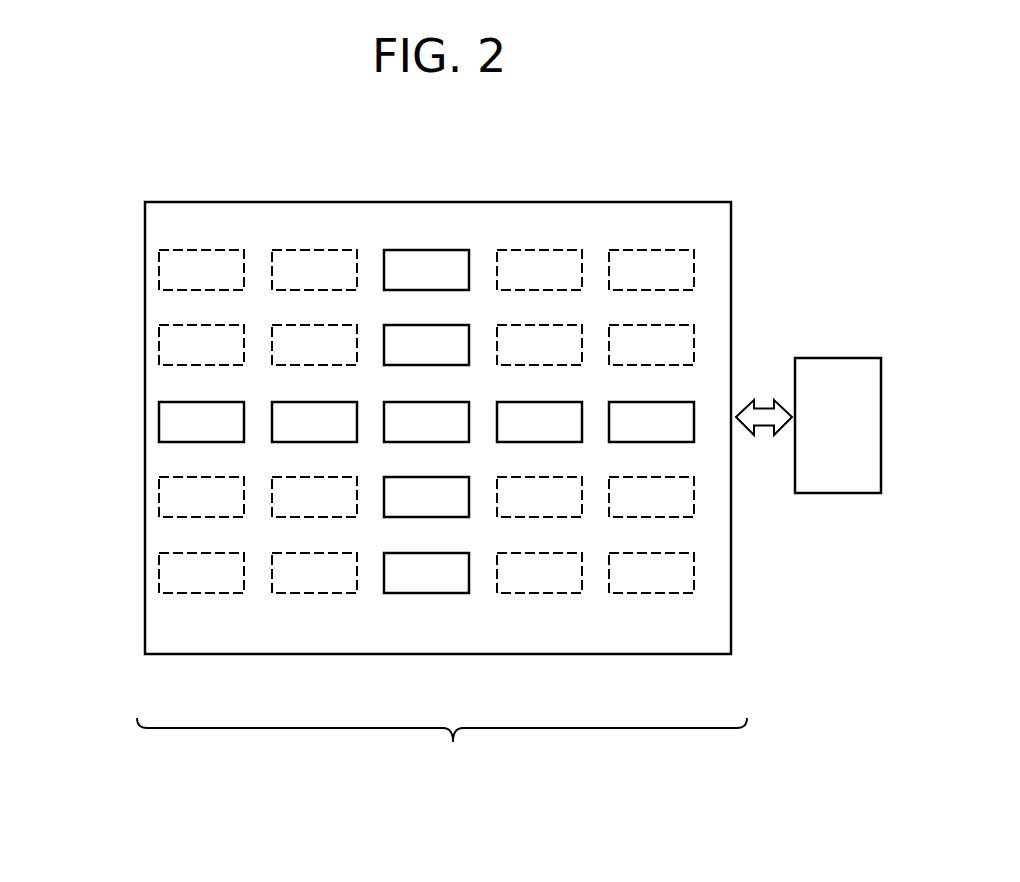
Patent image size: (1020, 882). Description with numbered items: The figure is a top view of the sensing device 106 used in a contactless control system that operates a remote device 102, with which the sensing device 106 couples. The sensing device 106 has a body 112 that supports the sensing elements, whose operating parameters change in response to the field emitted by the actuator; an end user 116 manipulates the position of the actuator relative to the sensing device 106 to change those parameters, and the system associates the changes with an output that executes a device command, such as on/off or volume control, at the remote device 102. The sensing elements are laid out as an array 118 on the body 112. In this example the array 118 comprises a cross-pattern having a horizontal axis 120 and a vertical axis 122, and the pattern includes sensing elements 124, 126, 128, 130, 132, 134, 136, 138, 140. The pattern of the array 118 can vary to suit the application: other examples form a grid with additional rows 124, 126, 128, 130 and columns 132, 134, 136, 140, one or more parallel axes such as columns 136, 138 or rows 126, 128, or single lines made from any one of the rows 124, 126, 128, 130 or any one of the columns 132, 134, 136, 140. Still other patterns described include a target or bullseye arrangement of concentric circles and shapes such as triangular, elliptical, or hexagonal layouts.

The remote device 102 is at (822, 430).
The sensing device 106 is at (763, 187).
The body 112 is at (145, 232).
The end user 116 is at (160, 412).
The array 118 is at (442, 744).
The horizontal axis 120 is at (555, 185).
The vertical axis 122 is at (736, 452).
The sensing element 124 is at (410, 434).
The sensing element 126 is at (410, 357).
The sensing element 128 is at (298, 434).
The sensing element 130 is at (410, 509).
The sensing element 132 is at (556, 434).
The sensing element 134 is at (410, 282).
The sensing element 136 is at (218, 434).
The sensing element 138 is at (410, 585).
The sensing element 140 is at (668, 434).